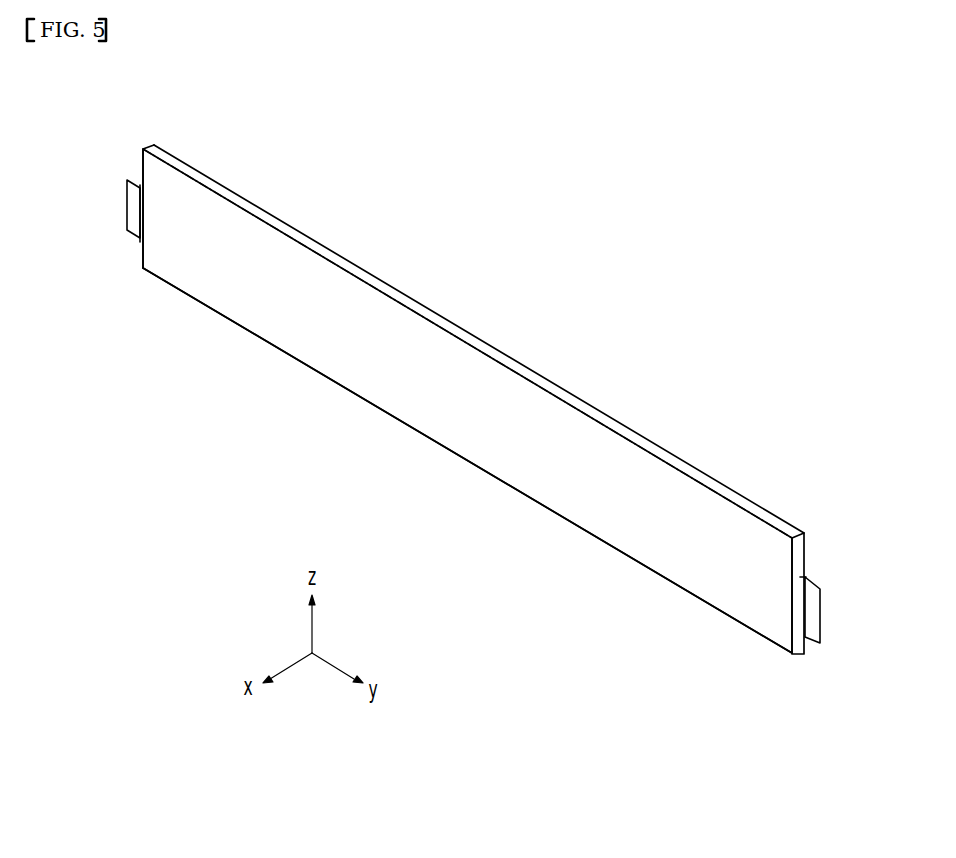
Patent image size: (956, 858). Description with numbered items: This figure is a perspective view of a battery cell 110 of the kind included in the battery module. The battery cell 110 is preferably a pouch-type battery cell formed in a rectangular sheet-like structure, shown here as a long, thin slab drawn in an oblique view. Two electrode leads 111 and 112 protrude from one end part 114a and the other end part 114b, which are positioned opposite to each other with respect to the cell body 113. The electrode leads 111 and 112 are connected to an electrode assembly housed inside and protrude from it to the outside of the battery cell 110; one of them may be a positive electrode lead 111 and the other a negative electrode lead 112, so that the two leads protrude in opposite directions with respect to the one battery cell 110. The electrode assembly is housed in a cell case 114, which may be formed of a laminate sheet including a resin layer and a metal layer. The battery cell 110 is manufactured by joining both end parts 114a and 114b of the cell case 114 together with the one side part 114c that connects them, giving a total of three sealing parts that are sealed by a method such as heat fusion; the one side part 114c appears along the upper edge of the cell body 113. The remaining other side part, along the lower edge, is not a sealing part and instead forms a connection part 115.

The battery cell 110 is at (466, 133).
The positive electrode lead 111 is at (812, 622).
The negative electrode lead 112 is at (134, 212).
The cell body 113 is at (528, 478).
The cell case 114 is at (474, 368).
The one end part 114a is at (804, 552).
The other end part 114b is at (141, 157).
The one side part 114c is at (467, 342).
The connection part 115 is at (410, 428).